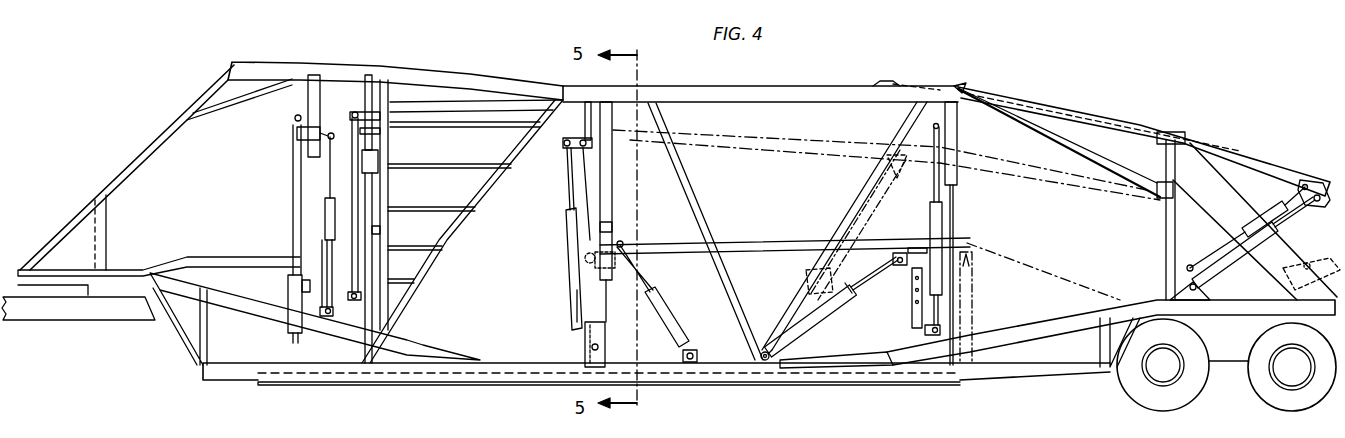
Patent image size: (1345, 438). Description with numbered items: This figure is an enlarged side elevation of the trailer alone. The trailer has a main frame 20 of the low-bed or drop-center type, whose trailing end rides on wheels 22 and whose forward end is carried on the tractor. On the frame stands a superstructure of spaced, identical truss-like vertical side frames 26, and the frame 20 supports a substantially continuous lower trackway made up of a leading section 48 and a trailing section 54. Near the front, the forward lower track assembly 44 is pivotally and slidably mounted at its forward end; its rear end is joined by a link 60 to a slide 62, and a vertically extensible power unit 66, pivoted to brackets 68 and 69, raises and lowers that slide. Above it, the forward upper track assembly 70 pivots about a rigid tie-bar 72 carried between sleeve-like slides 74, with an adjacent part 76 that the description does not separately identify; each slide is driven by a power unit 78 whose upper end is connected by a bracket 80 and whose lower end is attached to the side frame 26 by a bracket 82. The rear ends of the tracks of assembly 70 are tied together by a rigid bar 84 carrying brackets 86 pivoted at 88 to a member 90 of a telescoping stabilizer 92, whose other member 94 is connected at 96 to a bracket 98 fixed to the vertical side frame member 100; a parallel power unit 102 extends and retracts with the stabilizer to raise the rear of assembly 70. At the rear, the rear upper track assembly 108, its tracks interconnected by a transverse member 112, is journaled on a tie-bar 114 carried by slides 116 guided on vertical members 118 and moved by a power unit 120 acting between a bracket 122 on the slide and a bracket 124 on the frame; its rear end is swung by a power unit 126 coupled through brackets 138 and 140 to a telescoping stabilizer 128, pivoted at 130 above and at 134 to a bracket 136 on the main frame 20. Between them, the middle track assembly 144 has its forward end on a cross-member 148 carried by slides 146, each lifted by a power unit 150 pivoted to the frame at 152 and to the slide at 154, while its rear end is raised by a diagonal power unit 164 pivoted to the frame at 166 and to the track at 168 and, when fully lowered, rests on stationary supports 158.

The main frame 20 is at (965, 377).
The wheels 22 is at (1180, 398).
The vertical side frames 26 is at (812, 95).
The forward track assembly 44 is at (222, 262).
The leading section 48 is at (430, 385).
The rear section 54 is at (1050, 340).
The link 60 is at (293, 183).
The slide 62 is at (308, 150).
The power unit 66 is at (326, 232).
The bracket 68 is at (310, 135).
The bracket 69 is at (322, 317).
The forward upper track assembly 70 is at (497, 107).
The tie-bar 72 is at (370, 130).
The slides 74 is at (372, 157).
The piston rod 76 is at (372, 190).
The power unit 78 is at (372, 230).
The bracket 80 is at (363, 75).
The bracket 82 is at (360, 297).
The rigid bar 84 is at (588, 107).
The brackets 86 is at (577, 128).
The pivotal connection 88 is at (570, 163).
The stabilizer member 90 is at (583, 192).
The stabilizer 92 is at (613, 203).
The stabilizer member 94 is at (567, 237).
The pivotal connection 96 is at (590, 347).
The bracket 98 is at (605, 330).
The vertical side frame member 100 is at (633, 152).
The power units 102 is at (577, 300).
The rear upper track assembly 108 is at (1027, 157).
The transverse member 112 is at (1324, 210).
The tie-bar 114 is at (960, 88).
The slides 116 is at (953, 173).
The vertical side frame members 118 is at (958, 218).
The power unit 120 is at (935, 295).
The bracket 122 is at (935, 123).
The bracket 124 is at (973, 320).
The power unit 126 is at (1175, 225).
The stabilizer 128 is at (1218, 275).
The pivotal connection 130 is at (1327, 192).
The pivotal connection 134 is at (1183, 289).
The bracket 136 is at (1200, 303).
The bracket 138 is at (1306, 182).
The bracket 140 is at (1186, 266).
The middle track assembly 144 is at (790, 135).
The slides 146 is at (613, 227).
The cross-member 148 is at (577, 262).
The power unit 150 is at (667, 307).
The pivotal connection 152 is at (693, 343).
The pivotal connection 154 is at (650, 237).
The stationary supports 158 is at (913, 332).
The power unit 164 is at (800, 342).
The pivotal connection 166 is at (763, 352).
The pivotal connection 168 is at (893, 260).